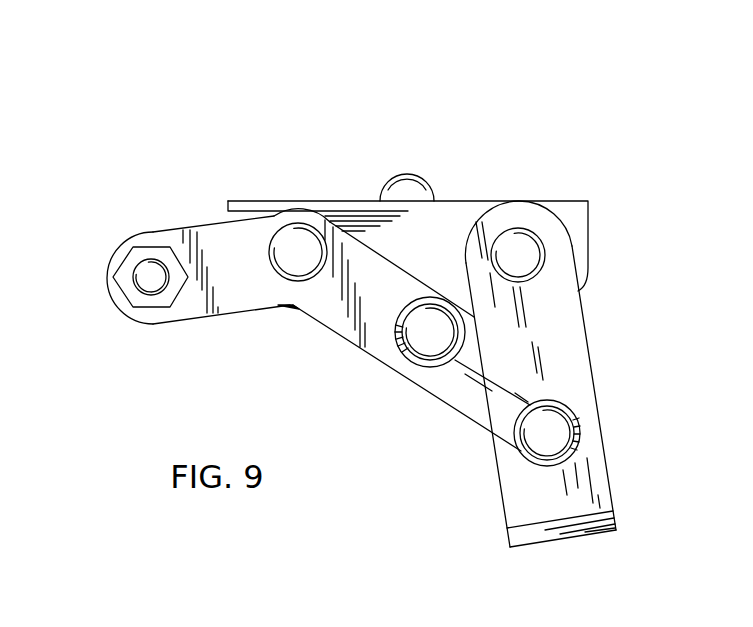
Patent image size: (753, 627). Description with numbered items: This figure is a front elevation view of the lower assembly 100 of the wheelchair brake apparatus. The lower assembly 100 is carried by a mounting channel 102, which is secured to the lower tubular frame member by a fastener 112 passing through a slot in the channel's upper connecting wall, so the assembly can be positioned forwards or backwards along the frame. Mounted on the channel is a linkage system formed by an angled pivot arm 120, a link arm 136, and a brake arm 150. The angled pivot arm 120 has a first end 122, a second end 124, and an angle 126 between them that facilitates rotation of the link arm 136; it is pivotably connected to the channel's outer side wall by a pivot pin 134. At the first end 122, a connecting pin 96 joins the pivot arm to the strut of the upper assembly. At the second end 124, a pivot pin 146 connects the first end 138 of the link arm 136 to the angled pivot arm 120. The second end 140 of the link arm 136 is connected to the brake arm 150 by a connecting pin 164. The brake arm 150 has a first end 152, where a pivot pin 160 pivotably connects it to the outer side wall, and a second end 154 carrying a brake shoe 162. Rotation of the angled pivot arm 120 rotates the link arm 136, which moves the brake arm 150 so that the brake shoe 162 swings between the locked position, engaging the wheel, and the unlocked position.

The lower assembly 100 is at (154, 106).
The mounting channel 102 is at (588, 202).
The fastener 112 is at (407, 180).
The angled pivot arm 120 is at (225, 222).
The first end of angled pivot arm 122 is at (115, 253).
The connecting pin 96 is at (152, 287).
The pivot pin 134 is at (290, 245).
The angle 126 is at (293, 307).
The second end of angled pivot arm 124 is at (413, 380).
The link arm 136 is at (463, 408).
The first end of link arm 138 is at (395, 333).
The pivot pin 146 is at (440, 332).
The second end of link arm 140 is at (580, 448).
The connecting pin 164 is at (555, 424).
The first end of brake arm 152 is at (508, 207).
The pivot pin 160 is at (518, 255).
The brake arm 150 is at (575, 353).
The second end of brake arm 154 is at (542, 546).
The brake shoe 162 is at (582, 522).